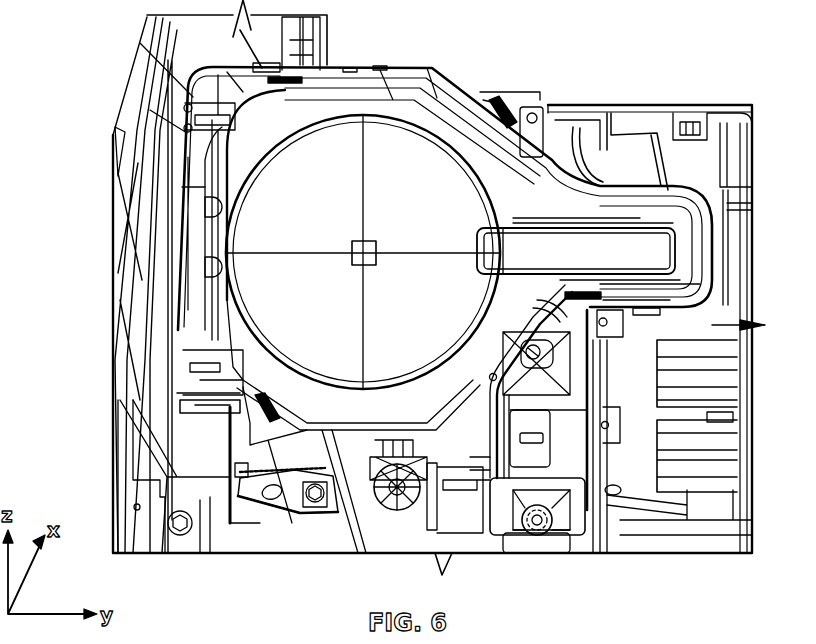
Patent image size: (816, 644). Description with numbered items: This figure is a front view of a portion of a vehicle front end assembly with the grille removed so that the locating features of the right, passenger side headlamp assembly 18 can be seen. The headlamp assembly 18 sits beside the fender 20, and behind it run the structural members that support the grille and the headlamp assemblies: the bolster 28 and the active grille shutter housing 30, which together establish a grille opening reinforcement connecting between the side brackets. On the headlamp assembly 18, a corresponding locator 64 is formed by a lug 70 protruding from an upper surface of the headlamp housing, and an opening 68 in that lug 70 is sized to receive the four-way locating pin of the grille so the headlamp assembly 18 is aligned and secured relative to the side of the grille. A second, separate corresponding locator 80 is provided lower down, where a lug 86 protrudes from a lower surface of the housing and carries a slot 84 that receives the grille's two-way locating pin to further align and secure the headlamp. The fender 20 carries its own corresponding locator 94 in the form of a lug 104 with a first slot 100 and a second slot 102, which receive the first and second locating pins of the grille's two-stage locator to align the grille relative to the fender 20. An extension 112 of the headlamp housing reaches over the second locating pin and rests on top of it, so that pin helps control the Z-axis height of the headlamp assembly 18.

The headlamp assembly 18 is at (428, 112).
The fender 20 is at (140, 43).
The bolster 28 is at (597, 108).
The active grille shutter housing 30 is at (676, 113).
The corresponding locator 64 is at (548, 128).
The opening 68 is at (512, 100).
The lug 70 is at (510, 145).
The corresponding locator 80 is at (537, 402).
The slot 84 is at (513, 350).
The lug 86 is at (525, 357).
The corresponding locator 94 is at (180, 366).
The first slot 100 is at (212, 358).
The second slot 102 is at (183, 393).
The lug 104 is at (200, 350).
The extension 112 is at (232, 380).